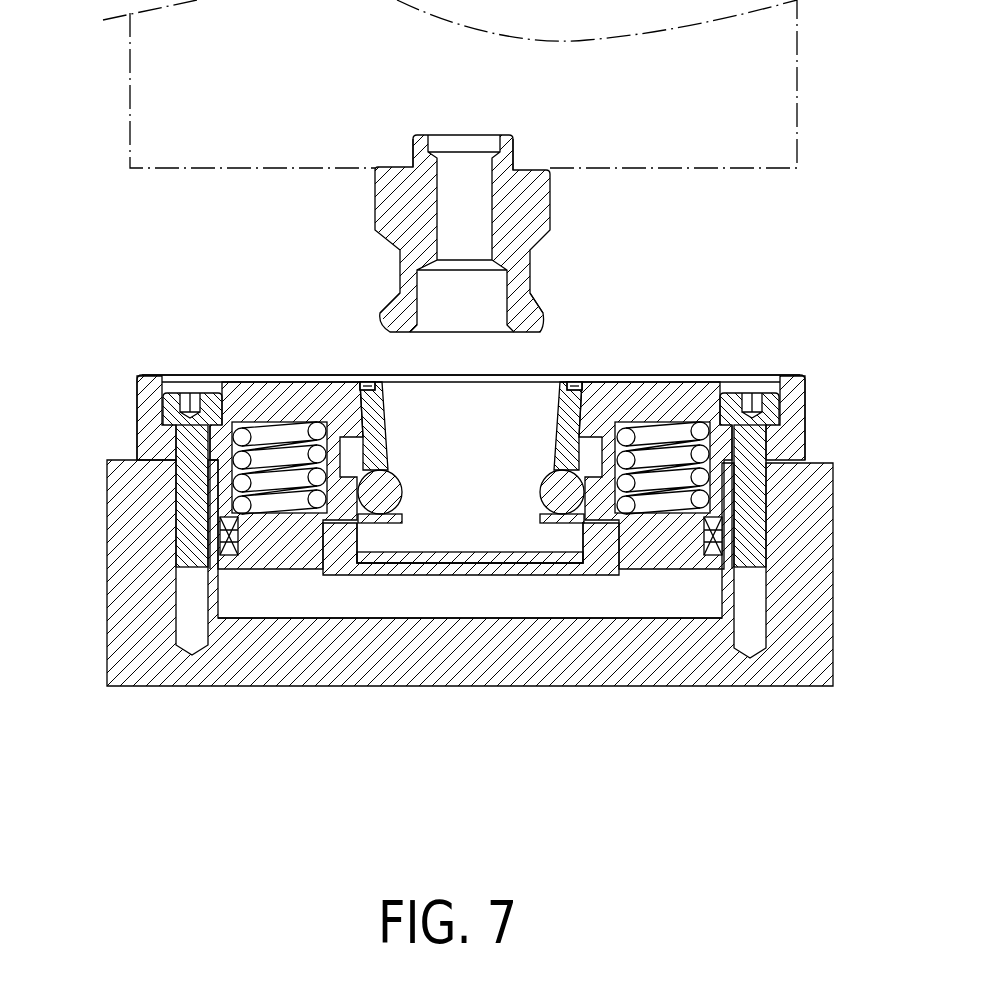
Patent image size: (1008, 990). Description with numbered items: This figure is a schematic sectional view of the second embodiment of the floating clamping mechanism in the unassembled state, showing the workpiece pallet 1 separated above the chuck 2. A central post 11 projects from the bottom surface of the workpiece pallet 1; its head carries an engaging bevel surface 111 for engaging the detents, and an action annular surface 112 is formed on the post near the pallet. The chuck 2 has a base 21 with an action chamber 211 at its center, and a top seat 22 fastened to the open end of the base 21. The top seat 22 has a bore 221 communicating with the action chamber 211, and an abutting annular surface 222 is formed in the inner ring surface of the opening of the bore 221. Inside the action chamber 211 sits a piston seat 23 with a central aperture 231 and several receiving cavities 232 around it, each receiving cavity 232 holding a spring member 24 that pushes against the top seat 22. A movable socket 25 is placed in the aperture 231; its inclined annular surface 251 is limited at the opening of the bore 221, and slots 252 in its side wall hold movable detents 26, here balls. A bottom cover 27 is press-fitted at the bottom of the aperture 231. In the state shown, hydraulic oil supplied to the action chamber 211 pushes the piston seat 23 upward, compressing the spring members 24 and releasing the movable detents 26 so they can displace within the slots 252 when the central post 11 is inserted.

The workpiece pallet 1 is at (797, 118).
The central post 11 is at (407, 260).
The engaging bevel surface 111 is at (545, 300).
The action annular surface 112 is at (550, 192).
The chuck 2 is at (122, 397).
The base 21 is at (470, 627).
The action chamber 211 is at (498, 605).
The top seat 22 is at (493, 433).
The bore 221 is at (540, 378).
The abutting annular surface 222 is at (434, 351).
The piston seat 23 is at (270, 543).
The aperture 231 is at (305, 535).
The receiving cavities 232 is at (232, 483).
The spring member 24 is at (270, 437).
The movable socket 25 is at (382, 445).
The inclined annular surface 251 is at (352, 408).
The slots 252 is at (363, 537).
The movable detents 26 is at (392, 492).
The bottom cover 27 is at (602, 560).